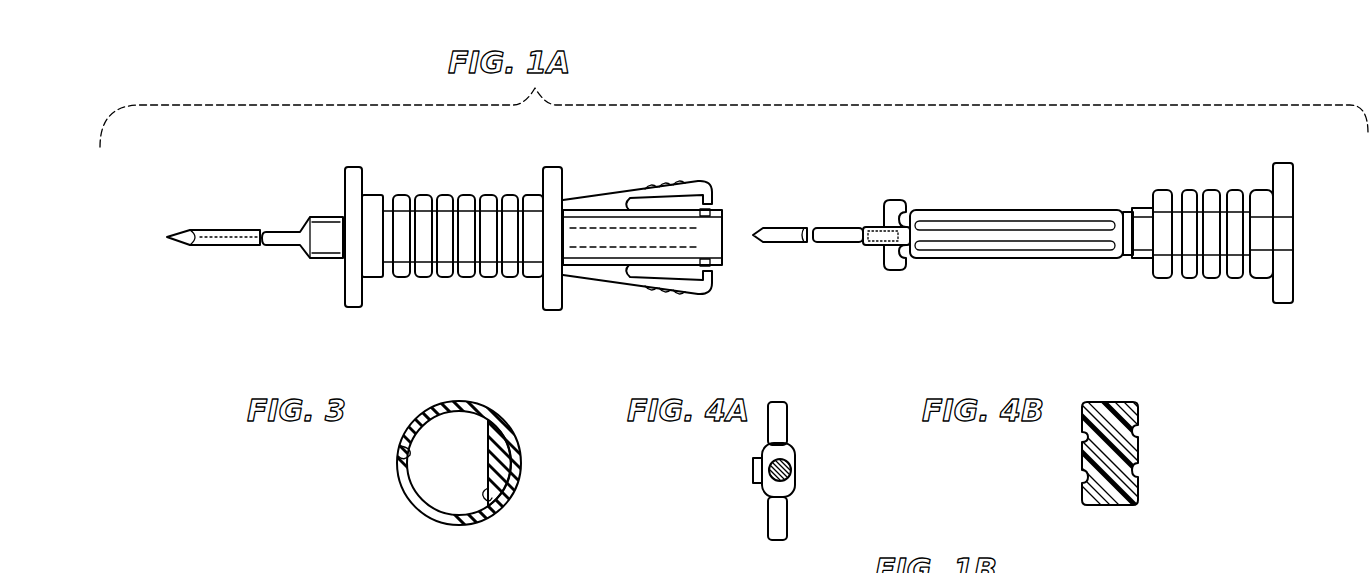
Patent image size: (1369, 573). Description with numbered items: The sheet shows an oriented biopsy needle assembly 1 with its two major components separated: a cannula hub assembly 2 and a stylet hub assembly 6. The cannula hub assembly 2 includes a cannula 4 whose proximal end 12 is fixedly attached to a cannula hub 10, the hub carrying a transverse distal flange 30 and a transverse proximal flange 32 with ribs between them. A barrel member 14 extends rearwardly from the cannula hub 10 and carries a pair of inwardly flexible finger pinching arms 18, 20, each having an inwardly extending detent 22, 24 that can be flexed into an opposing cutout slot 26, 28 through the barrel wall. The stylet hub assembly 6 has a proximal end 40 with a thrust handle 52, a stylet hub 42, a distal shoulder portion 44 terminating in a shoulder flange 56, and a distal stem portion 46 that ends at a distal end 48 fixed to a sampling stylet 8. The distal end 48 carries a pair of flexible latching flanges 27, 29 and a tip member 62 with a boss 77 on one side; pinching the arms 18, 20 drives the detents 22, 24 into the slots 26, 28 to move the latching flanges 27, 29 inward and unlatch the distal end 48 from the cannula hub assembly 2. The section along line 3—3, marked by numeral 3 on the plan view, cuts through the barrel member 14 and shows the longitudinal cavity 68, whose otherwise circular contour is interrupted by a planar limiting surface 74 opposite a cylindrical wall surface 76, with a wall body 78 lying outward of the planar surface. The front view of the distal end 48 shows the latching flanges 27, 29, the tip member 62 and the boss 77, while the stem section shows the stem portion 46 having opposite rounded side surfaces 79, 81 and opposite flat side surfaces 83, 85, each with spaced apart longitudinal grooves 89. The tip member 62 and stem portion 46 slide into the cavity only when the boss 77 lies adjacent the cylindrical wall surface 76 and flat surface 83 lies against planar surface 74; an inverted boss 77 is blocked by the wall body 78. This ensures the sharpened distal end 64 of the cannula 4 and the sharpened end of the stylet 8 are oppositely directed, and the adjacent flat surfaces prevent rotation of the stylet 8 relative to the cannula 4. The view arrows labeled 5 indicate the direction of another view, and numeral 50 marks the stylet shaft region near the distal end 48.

In FIG. 1A, the oriented biopsy needle assembly 1 is at (208, 160).
In FIG. 1A, the cannula hub assembly 2 is at (312, 292).
In FIG. 1A, the section line 3- 3 is at (722, 160).
In FIG. 1A, the cannula 4 is at (217, 240).
In FIG. 1A, the view direction 5 is at (160, 237).
In FIG. 1A, the stylet hub assembly 6 is at (1222, 300).
In FIG. 1A, the sampling stylet 8 is at (790, 240).
In FIG. 4A, the sampling stylet 8 is at (777, 482).
In FIG. 1A, the cannula hub 10 is at (560, 153).
In FIG. 1A, the proximal end of the cannula 12 is at (290, 228).
In FIG. 1A, the barrel member 14 is at (712, 315).
In FIG. 3, the barrel member 14 is at (503, 408).
In FIG. 1A, the finger pinching arm 18 is at (652, 192).
In FIG. 1A, the finger pinching arm 20 is at (643, 282).
In FIG. 1A, the detent 22 is at (704, 208).
In FIG. 1A, the detent 24 is at (703, 283).
In FIG. 1A, the cutout slot 26 is at (699, 210).
In FIG. 1A, the flexible latching flange 27 is at (893, 262).
In FIG. 4A, the flexible latching flange 27 is at (775, 517).
In FIG. 1A, the cutout slot 28 is at (703, 263).
In FIG. 1A, the flexible latching flange 29 is at (893, 207).
In FIG. 4A, the flexible latching flange 29 is at (780, 420).
In FIG. 1A, the transverse distal flange 30 is at (352, 309).
In FIG. 1A, the transverse proximal flange 32 is at (550, 311).
In FIG. 1A, the proximal end of the stylet hub assembly 40 is at (1297, 182).
In FIG. 1A, the stylet hub 42 is at (1283, 152).
In FIG. 1A, the distal shoulder portion 44 is at (1127, 204).
In FIG. 1A, the distal stem portion 46 is at (1027, 258).
In FIG. 1A, the distal end of the stylet hub assembly 48 is at (862, 221).
In FIG. 4A, the distal end of the stylet hub assembly 48 is at (802, 455).
In FIG. 1A, the rod 50 is at (857, 228).
In FIG. 1A, the thrust handle 52 is at (1285, 304).
In FIG. 1A, the shoulder flange 56 is at (1162, 279).
In FIG. 1A, the tip member 62 is at (868, 240).
In FIG. 4A, the tip member 62 is at (790, 478).
In FIG. 1A, the sharpened distal end of the cannula 64 is at (183, 238).
In FIG. 3, the longitudinal cavity 68 is at (442, 476).
In FIG. 3, the planar limiting surface 74 is at (493, 508).
In FIG. 3, the cylindrical wall surface 76 is at (400, 452).
In FIG. 4A, the boss 77 is at (757, 472).
In FIG. 1A, the wall body 78 is at (718, 227).
In FIG. 3, the wall body 78 is at (510, 467).
In FIG. 1A, the rounded side surface 79 is at (1033, 210).
In FIG. 4B, the rounded side surface 79 is at (1107, 402).
In FIG. 1A, the rounded side surface 81 is at (1075, 258).
In FIG. 4B, the rounded side surface 81 is at (1113, 505).
In FIG. 1A, the flat side surface 83 is at (983, 236).
In FIG. 4B, the flat side surface 83 is at (1138, 453).
In FIG. 4B, the flat side surface 85 is at (1082, 455).
In FIG. 4B, the longitudinal grooves 89 is at (1138, 427).